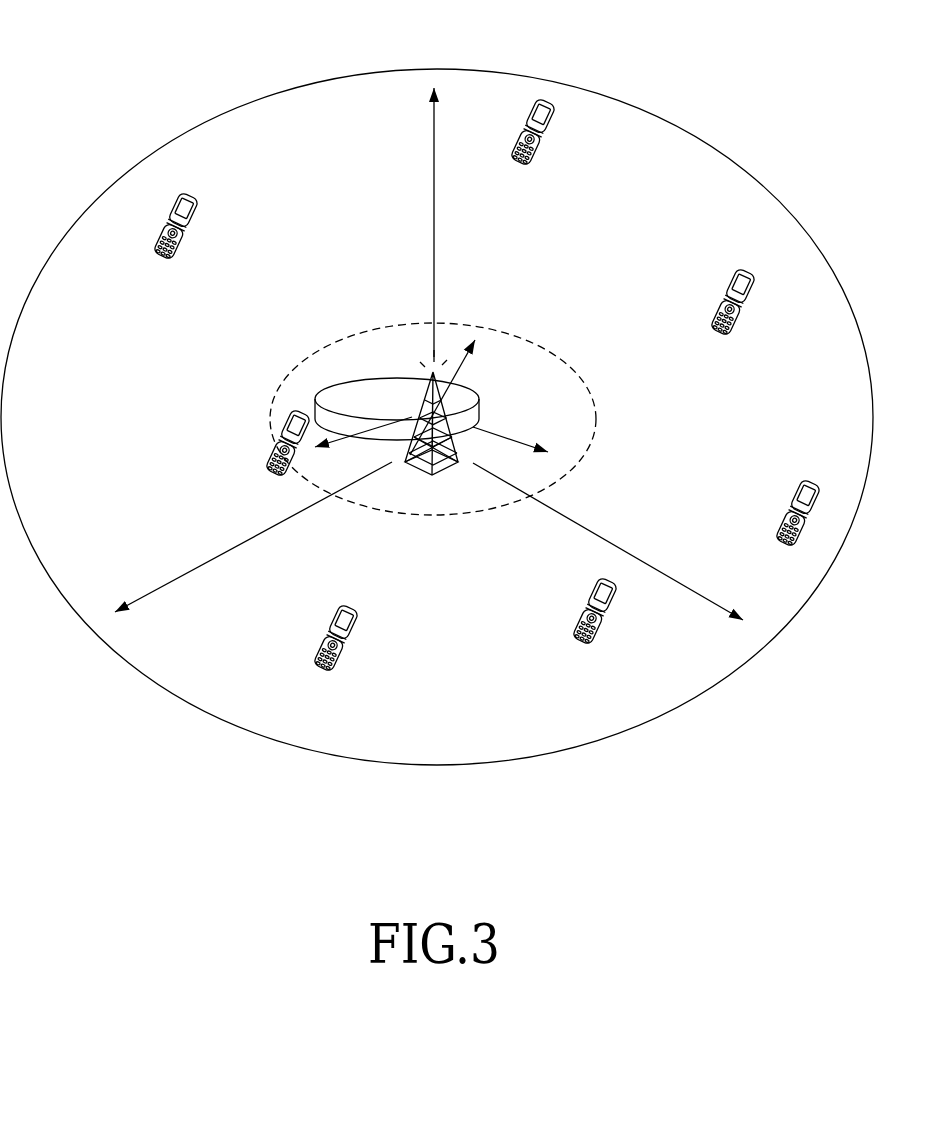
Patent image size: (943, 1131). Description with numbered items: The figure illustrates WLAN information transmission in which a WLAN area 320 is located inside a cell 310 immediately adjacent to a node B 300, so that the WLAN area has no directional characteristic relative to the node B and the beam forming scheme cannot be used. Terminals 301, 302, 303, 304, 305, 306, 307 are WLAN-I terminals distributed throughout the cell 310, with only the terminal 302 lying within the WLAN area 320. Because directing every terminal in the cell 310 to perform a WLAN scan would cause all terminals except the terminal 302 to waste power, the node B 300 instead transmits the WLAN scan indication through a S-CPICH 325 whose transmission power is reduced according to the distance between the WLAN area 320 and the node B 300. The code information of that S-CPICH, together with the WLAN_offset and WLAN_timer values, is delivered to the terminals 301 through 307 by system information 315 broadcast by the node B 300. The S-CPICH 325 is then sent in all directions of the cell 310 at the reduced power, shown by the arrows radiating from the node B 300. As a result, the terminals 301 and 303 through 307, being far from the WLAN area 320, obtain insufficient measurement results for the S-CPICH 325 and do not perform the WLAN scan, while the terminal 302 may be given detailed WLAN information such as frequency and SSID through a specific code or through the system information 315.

The node B 300 is at (433, 517).
The terminal 301 is at (160, 228).
The terminal 302 is at (268, 452).
The terminal 303 is at (321, 638).
The terminal 304 is at (580, 612).
The terminal 305 is at (782, 517).
The terminal 306 is at (718, 308).
The terminal 307 is at (521, 140).
The cell 310 is at (437, 68).
The system information 315 is at (615, 166).
The WLAN area 320 is at (377, 377).
The S-CPICH 325 is at (637, 402).